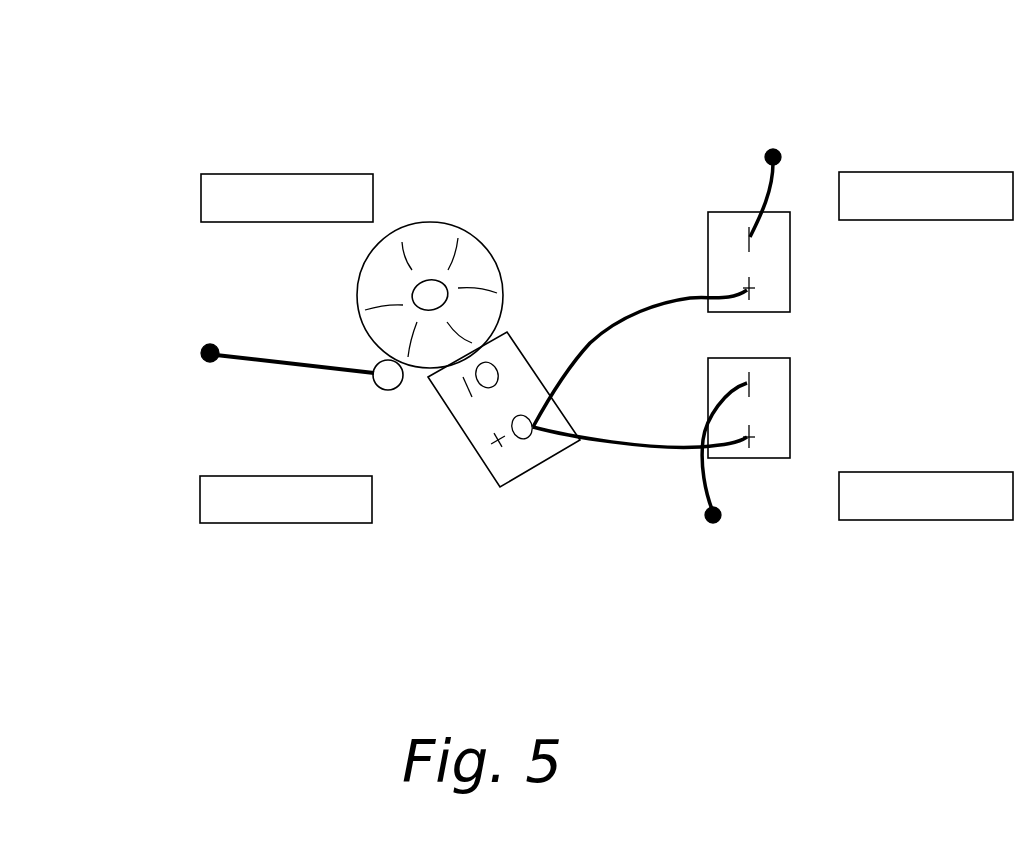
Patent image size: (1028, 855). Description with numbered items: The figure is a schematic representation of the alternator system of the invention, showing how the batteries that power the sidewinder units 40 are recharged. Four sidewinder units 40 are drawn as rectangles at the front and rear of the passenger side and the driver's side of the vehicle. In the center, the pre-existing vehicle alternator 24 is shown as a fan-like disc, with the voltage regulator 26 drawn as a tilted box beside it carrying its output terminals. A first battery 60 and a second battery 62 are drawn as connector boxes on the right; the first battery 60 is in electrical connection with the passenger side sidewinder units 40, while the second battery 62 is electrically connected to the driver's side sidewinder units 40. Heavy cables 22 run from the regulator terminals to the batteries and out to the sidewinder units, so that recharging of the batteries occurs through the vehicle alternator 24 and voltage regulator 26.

The cable 22 is at (202, 352).
The vehicle alternator 24 is at (430, 248).
The voltage regulator 26 is at (510, 373).
The sidewinder unit 40 is at (270, 174).
The first battery 60 is at (735, 238).
The second battery 62 is at (762, 437).